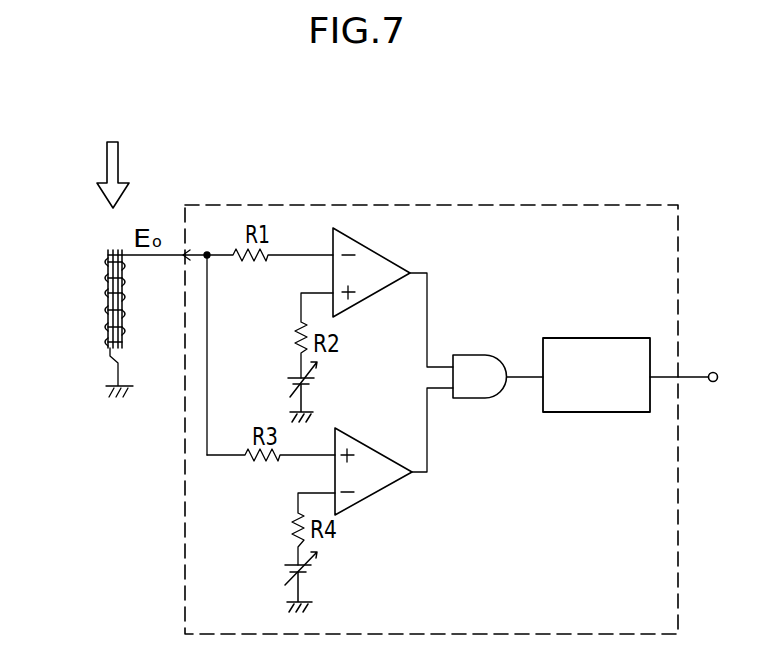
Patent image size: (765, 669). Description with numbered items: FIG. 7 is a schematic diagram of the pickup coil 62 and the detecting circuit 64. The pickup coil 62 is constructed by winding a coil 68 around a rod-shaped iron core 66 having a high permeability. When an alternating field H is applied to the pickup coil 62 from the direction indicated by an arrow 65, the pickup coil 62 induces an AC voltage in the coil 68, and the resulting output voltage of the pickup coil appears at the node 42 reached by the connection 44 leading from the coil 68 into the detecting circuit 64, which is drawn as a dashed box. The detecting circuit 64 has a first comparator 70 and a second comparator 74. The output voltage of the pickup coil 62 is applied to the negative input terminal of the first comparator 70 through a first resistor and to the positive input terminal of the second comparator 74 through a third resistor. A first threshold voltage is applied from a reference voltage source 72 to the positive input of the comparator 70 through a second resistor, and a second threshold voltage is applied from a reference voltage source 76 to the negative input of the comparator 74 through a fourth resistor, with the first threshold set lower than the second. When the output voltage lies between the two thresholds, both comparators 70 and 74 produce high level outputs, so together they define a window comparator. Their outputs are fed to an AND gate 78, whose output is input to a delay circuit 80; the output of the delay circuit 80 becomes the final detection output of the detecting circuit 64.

The output terminal node 42 is at (188, 253).
The connection lead 44 is at (178, 262).
The pickup coil 62 is at (105, 293).
The detecting circuit 64 is at (468, 203).
The arrow 65 is at (107, 165).
The rod-shaped iron core 66 is at (108, 341).
The coil 68 is at (124, 307).
The first comparator 70 is at (389, 257).
The reference voltage source 72 is at (297, 377).
The second comparator 74 is at (381, 494).
The reference voltage source 76 is at (295, 563).
The AND gate 78 is at (494, 354).
The delay circuit 80 is at (572, 338).